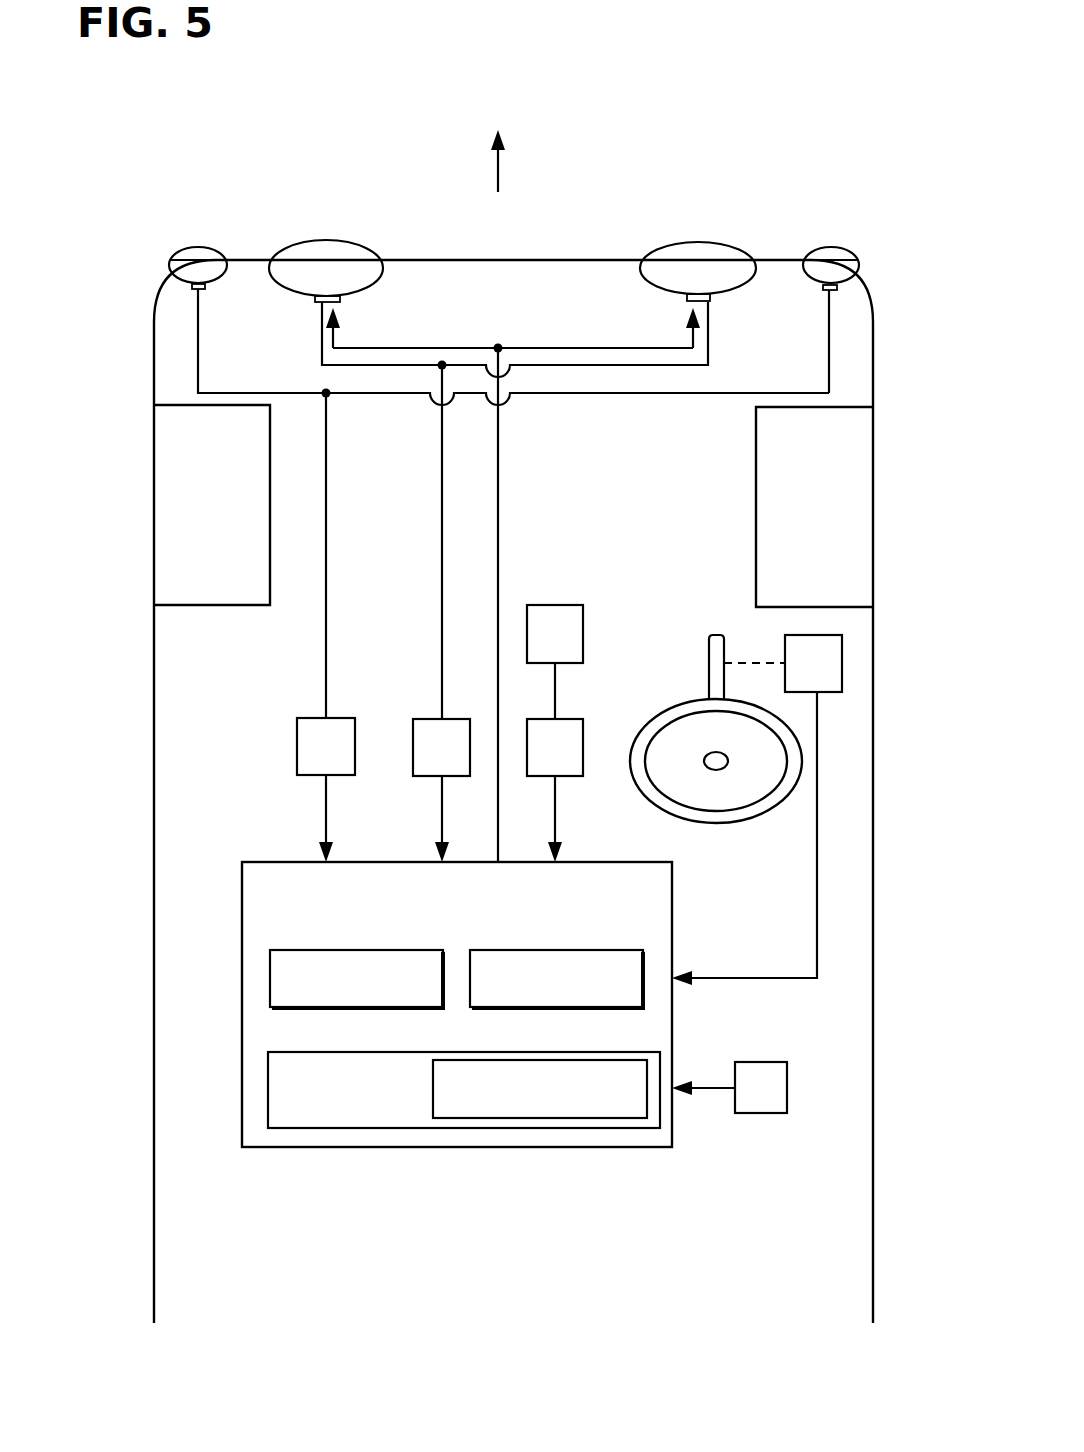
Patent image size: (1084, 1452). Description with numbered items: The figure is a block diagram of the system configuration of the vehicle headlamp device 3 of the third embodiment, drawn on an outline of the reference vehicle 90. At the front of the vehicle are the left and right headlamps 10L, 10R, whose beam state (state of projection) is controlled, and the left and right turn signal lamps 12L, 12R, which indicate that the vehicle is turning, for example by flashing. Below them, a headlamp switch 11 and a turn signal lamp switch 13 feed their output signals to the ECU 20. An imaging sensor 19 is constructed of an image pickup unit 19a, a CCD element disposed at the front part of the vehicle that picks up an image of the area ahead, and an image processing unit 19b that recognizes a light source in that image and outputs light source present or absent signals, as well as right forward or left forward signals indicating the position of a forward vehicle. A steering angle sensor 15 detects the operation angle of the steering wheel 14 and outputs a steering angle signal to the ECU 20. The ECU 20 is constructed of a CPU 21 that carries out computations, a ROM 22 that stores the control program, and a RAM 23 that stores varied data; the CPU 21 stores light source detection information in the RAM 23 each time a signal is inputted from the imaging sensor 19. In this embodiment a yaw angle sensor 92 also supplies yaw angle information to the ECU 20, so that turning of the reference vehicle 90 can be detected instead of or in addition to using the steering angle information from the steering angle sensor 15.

The vehicle headlamp device 3 is at (812, 140).
The reference vehicle 90 is at (873, 729).
The headlamp 10L is at (323, 240).
The headlamp 10R is at (727, 242).
The turn signal lamp 12L is at (212, 246).
The turn signal lamp 12R is at (847, 247).
The turn signal lamp switch 13 is at (310, 718).
The headlamp switch 11 is at (430, 719).
The imaging sensor 19 is at (579, 605).
The image pickup unit 19a is at (567, 605).
The image processing unit 19b is at (568, 719).
The steering wheel 14 is at (697, 823).
The steering angle sensor 15 is at (842, 665).
The ECU 20 is at (503, 1004).
The CPU 21 is at (353, 950).
The ROM 22 is at (547, 950).
The RAM 23 is at (563, 1052).
The yaw angle sensor 92 is at (787, 1087).